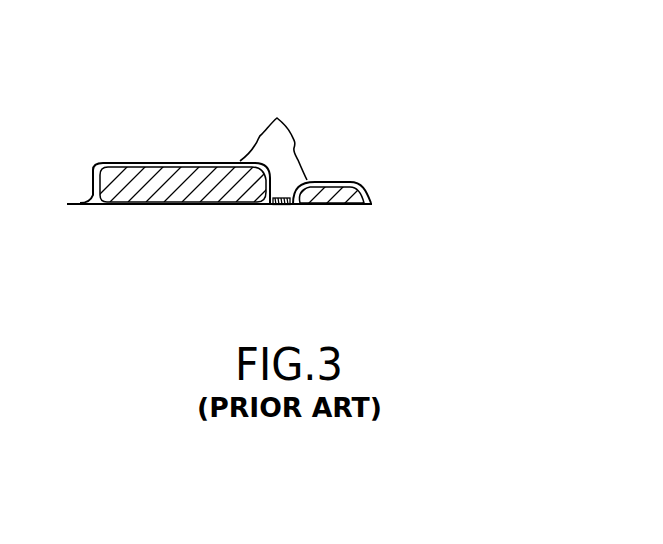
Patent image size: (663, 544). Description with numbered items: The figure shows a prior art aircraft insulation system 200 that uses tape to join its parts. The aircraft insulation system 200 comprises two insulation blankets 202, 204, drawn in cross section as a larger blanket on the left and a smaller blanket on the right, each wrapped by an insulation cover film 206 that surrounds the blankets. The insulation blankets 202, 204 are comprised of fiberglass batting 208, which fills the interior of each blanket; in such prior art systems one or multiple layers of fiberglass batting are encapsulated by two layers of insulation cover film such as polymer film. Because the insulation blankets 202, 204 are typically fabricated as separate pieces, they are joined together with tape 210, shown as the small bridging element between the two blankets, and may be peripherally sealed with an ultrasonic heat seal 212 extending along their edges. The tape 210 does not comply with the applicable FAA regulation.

The aircraft insulation system 200 is at (468, 90).
The insulation blanket 202 is at (113, 178).
The insulation blanket 204 is at (358, 196).
The insulation cover film 206 is at (298, 246).
The fiberglass batting 208 is at (143, 192).
The tape 210 is at (279, 207).
The ultrasonic heat seal 212 is at (370, 199).